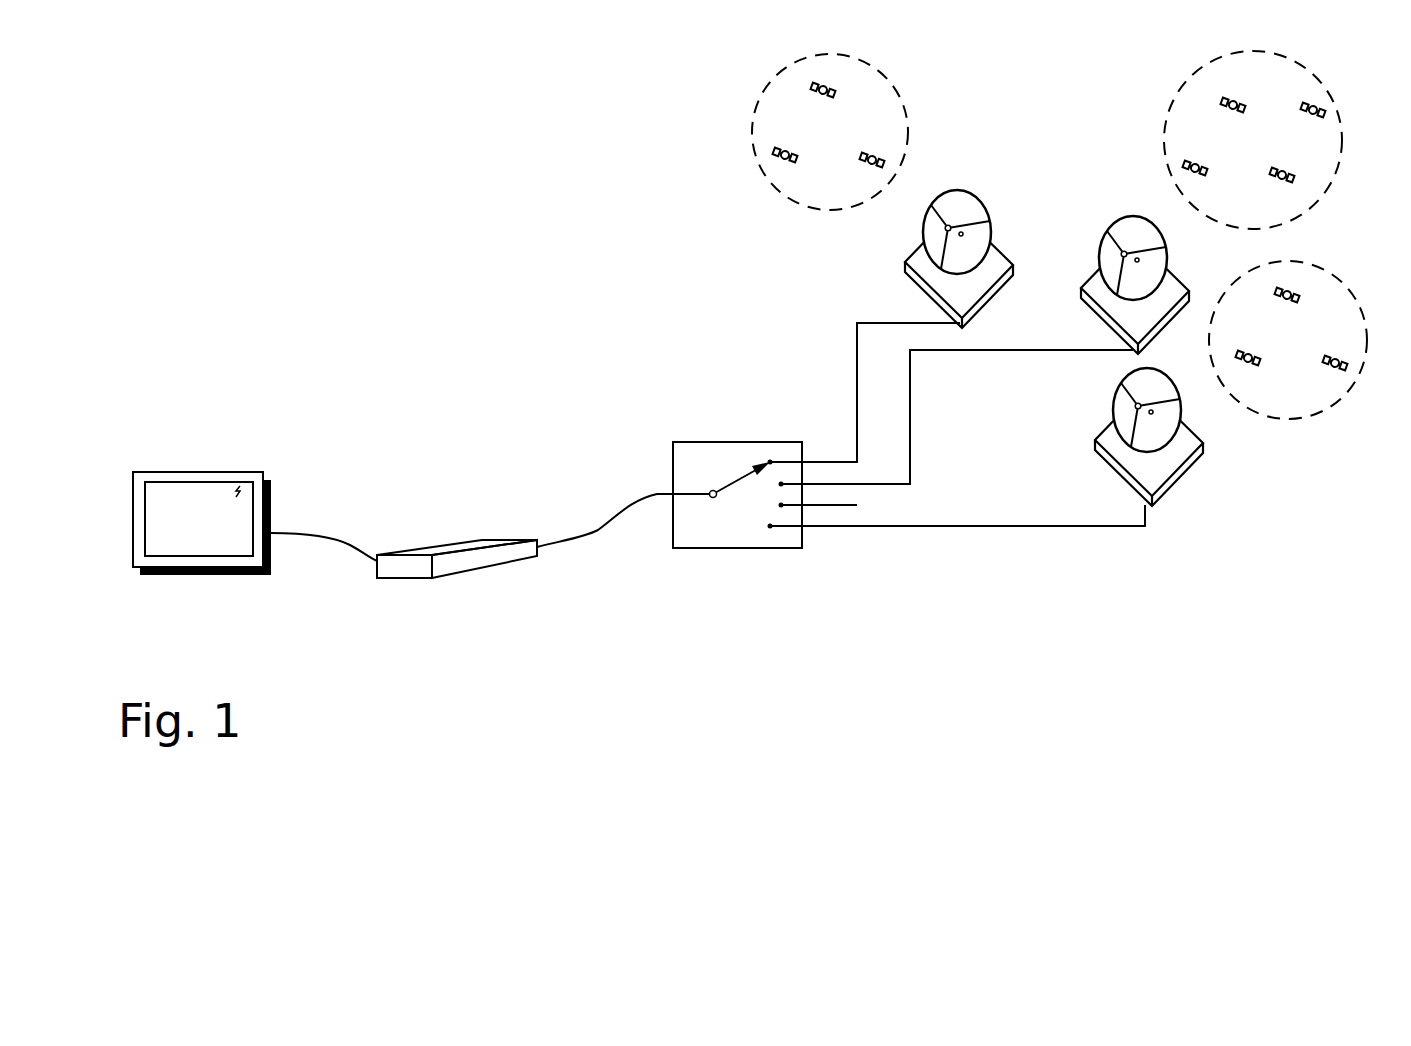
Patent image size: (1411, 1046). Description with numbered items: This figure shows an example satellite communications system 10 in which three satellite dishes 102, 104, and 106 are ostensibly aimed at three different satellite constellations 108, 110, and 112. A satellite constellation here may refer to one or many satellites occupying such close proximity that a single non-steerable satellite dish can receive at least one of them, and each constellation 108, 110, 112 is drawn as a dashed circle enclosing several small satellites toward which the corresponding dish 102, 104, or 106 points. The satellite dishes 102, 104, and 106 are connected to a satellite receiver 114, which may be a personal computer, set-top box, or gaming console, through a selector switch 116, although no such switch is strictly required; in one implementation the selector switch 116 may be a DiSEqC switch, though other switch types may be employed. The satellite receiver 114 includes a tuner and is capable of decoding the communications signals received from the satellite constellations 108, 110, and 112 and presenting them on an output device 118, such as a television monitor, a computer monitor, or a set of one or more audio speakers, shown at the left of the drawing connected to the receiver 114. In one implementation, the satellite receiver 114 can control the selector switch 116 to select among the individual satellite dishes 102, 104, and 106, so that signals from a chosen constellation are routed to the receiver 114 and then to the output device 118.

The satellite communication system 10 is at (1347, 695).
The satellite dish 102 is at (980, 194).
The satellite dish 104 is at (1102, 233).
The satellite dish 106 is at (1115, 397).
The satellite constellation 108 is at (757, 108).
The satellite constellation 110 is at (1172, 110).
The satellite constellation 112 is at (1269, 264).
The satellite receiver 114 is at (470, 543).
The selector switch 116 is at (673, 462).
The output device 118 is at (170, 472).